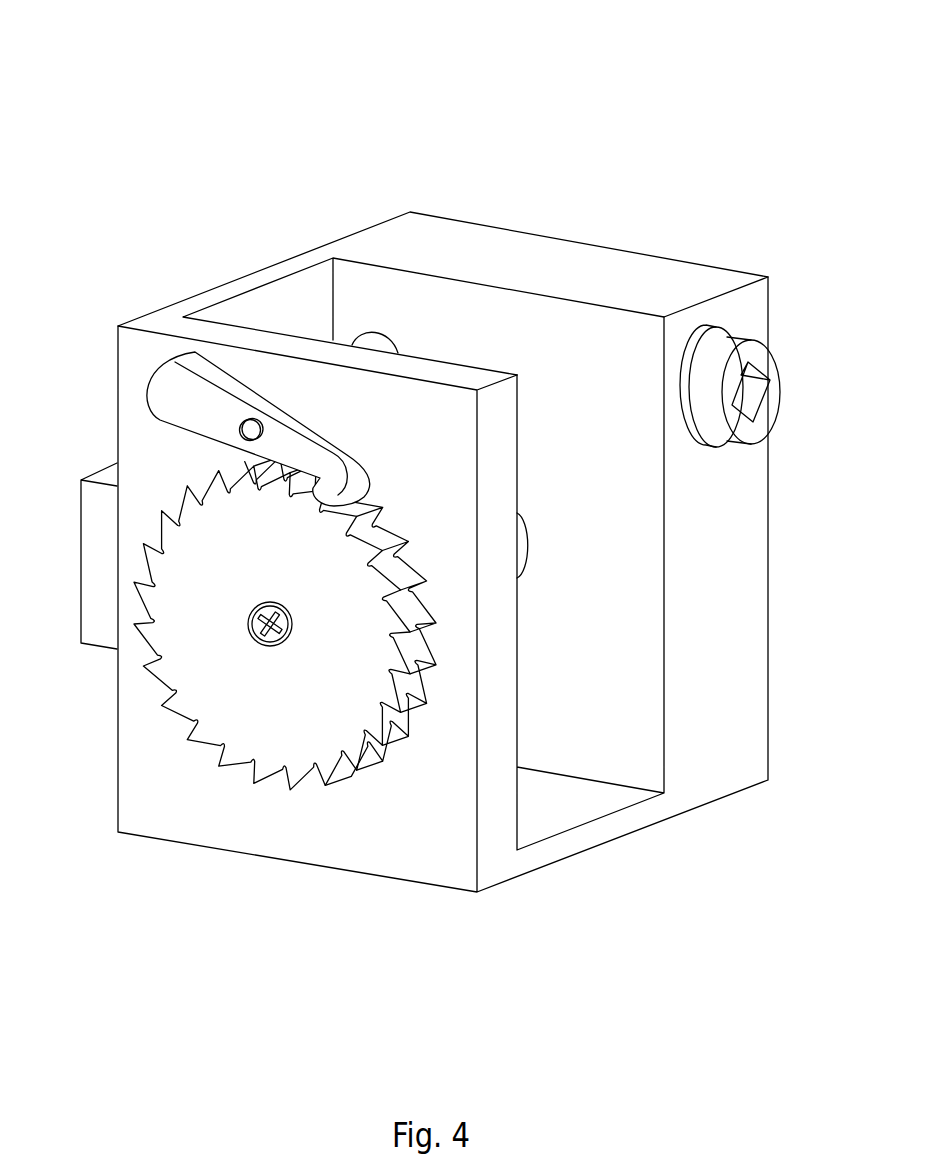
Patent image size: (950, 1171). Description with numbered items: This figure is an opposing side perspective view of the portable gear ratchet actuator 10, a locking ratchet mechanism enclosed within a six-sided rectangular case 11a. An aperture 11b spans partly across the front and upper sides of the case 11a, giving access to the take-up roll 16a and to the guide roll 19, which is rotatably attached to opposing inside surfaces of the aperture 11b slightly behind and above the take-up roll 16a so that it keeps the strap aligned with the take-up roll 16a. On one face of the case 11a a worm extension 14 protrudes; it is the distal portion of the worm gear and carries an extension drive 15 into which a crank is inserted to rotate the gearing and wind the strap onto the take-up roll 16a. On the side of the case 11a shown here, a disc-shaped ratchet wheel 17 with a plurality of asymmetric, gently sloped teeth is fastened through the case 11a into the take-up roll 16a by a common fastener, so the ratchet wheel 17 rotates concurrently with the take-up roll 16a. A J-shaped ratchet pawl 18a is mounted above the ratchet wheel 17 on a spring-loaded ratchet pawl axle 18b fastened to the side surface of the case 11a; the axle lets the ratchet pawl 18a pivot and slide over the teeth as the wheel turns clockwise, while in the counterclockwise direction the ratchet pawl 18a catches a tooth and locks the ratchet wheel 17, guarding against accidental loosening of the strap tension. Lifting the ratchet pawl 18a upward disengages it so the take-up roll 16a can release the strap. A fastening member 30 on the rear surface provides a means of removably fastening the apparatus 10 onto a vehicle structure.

The portable gear ratchet actuator 10 is at (125, 108).
The case 11a is at (620, 270).
The aperture 11b is at (517, 813).
The worm extension 14 is at (733, 345).
The extension drive 15 is at (757, 393).
The take-up roll 16a is at (520, 548).
The ratchet wheel 17 is at (218, 733).
The ratchet pawl 18a is at (167, 378).
The ratchet pawl axle 18b is at (250, 419).
The guide roll 19 is at (375, 345).
The fastening member 30 is at (98, 510).